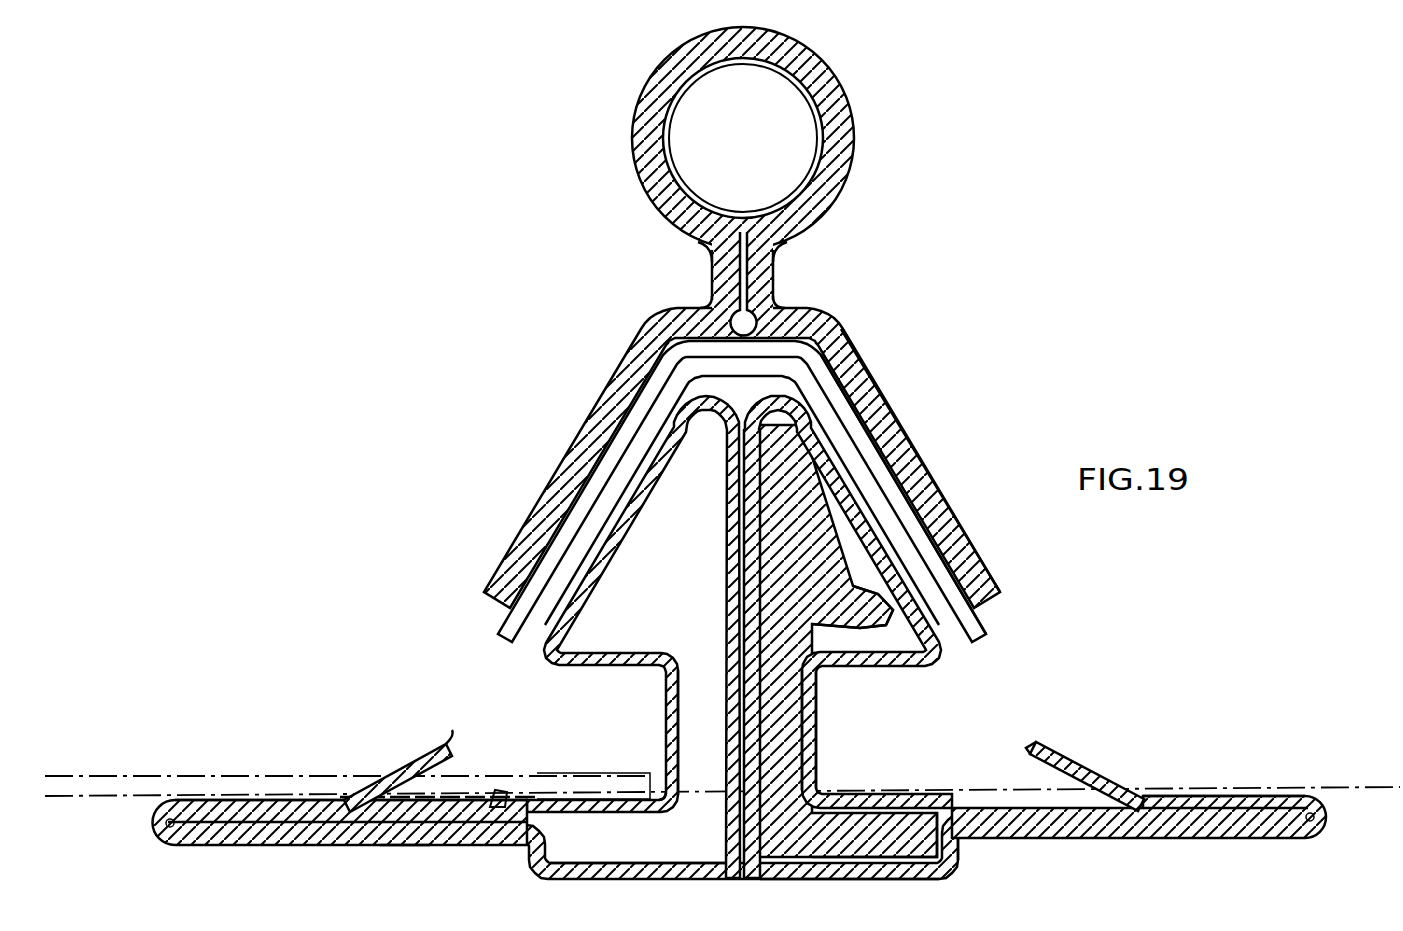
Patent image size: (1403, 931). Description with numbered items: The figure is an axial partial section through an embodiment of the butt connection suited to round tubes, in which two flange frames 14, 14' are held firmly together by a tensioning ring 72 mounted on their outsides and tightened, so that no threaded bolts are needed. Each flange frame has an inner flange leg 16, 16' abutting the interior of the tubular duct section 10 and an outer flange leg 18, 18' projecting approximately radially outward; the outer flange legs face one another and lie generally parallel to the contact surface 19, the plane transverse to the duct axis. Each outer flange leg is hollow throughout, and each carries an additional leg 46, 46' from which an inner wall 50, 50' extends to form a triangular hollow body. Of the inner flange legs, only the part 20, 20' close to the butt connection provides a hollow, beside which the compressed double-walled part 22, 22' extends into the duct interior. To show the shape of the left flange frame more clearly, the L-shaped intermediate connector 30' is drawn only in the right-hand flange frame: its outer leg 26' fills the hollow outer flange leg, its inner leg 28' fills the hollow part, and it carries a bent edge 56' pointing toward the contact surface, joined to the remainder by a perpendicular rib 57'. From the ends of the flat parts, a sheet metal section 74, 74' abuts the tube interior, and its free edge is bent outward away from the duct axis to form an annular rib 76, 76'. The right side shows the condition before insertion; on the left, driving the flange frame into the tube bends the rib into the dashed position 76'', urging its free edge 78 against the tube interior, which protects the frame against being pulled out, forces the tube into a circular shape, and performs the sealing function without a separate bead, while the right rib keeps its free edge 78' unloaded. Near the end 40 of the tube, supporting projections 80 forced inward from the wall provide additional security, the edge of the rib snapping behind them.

The duct section 10 is at (103, 778).
The flange frame 14 is at (732, 458).
The flange frame 14' is at (920, 460).
The inner flange leg 16 is at (695, 852).
The inner flange leg 16' is at (1013, 857).
The outer flange leg 18 is at (613, 732).
The outer flange leg 18' is at (851, 730).
The contact surface 19 is at (752, 346).
The hollow part 20 is at (638, 841).
The hollow part 20' is at (849, 817).
The compressed double-walled part 22 is at (340, 842).
The compressed double-walled part 22' is at (1139, 835).
The outer leg of intermediate connector 26' is at (837, 646).
The inner leg of intermediate connector 28' is at (881, 796).
The intermediate connector 30' is at (858, 730).
The end of tube section 40 is at (666, 796).
The additional leg 46 is at (742, 491).
The additional leg 46' is at (910, 494).
The inner wall 50 is at (633, 637).
The inner wall 50' is at (886, 637).
The bent edge 56' is at (862, 619).
The rib of intermediate connector 57' is at (791, 500).
The tensioning ring 72 is at (641, 208).
The sheet metal section 74 is at (351, 765).
The sheet metal section 74' is at (1224, 749).
The annular rib 76 is at (398, 758).
The annular rib 76' is at (1093, 747).
The bent position of annular rib 76'' is at (397, 845).
The free edge of annular rib 78 is at (443, 720).
The free edge of annular rib 78' is at (1018, 723).
The supporting projection 80 is at (503, 795).